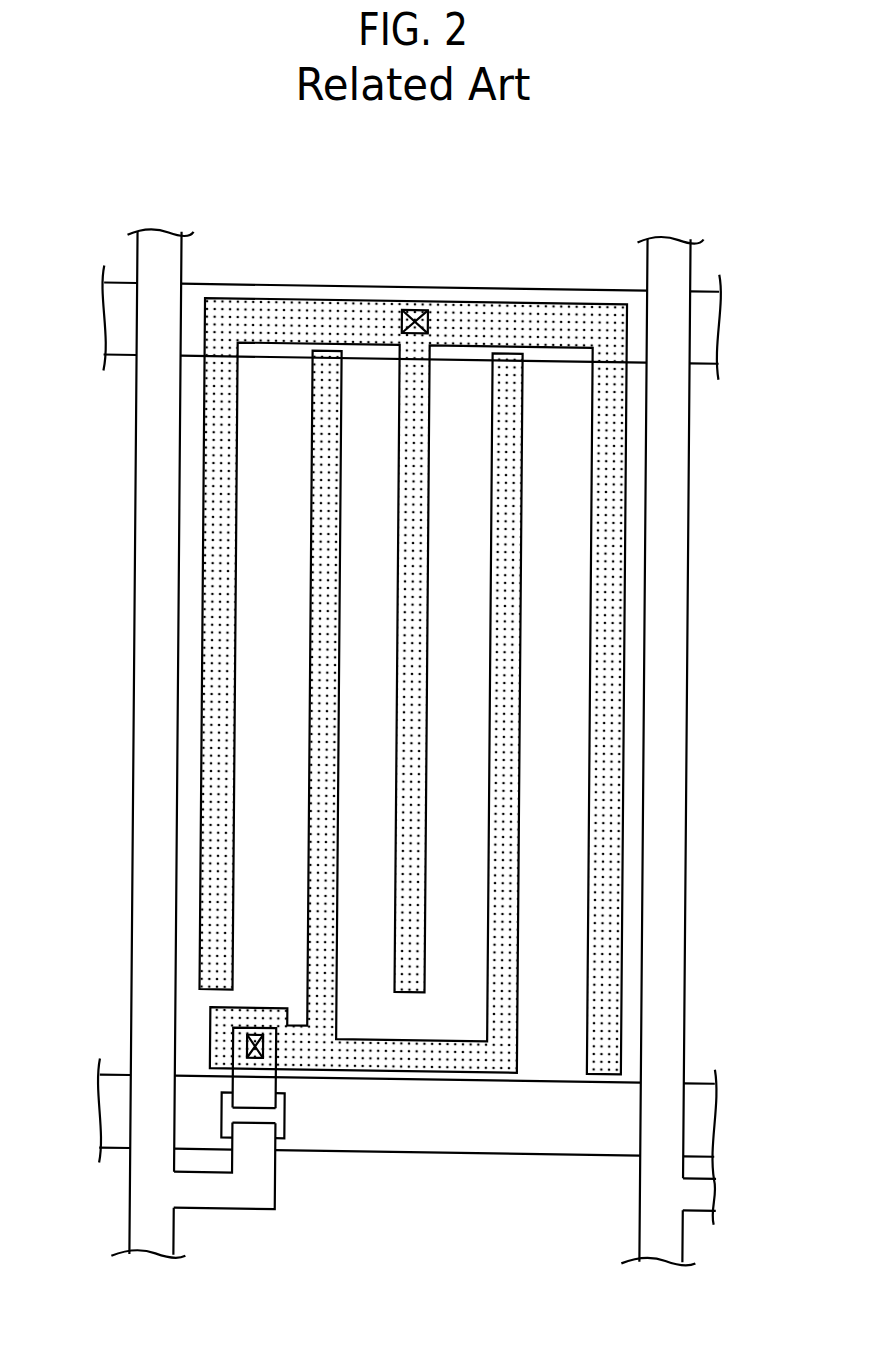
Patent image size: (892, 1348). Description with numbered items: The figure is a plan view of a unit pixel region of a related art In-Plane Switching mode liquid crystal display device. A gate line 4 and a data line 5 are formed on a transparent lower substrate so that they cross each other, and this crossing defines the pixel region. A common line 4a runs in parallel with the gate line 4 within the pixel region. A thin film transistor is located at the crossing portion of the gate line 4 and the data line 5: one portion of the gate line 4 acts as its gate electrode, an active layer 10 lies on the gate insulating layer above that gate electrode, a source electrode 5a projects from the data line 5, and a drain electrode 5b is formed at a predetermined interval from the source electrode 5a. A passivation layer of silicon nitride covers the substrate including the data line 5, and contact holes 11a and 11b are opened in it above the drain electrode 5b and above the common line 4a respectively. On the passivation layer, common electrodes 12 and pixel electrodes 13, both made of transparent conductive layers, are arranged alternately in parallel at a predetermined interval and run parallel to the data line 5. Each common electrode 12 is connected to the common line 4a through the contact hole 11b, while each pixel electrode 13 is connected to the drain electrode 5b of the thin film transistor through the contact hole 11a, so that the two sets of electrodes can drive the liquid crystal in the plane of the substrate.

The gate line 4 is at (459, 1152).
The common line 4a is at (286, 286).
The data line 5 is at (135, 897).
The source electrode 5a is at (246, 1211).
The drain electrode 5b is at (216, 1034).
The active layer 10 is at (288, 1114).
The contact hole 11a is at (250, 1047).
The contact hole 11b is at (409, 309).
The common electrode 12 is at (598, 649).
The pixel electrode 13 is at (326, 858).